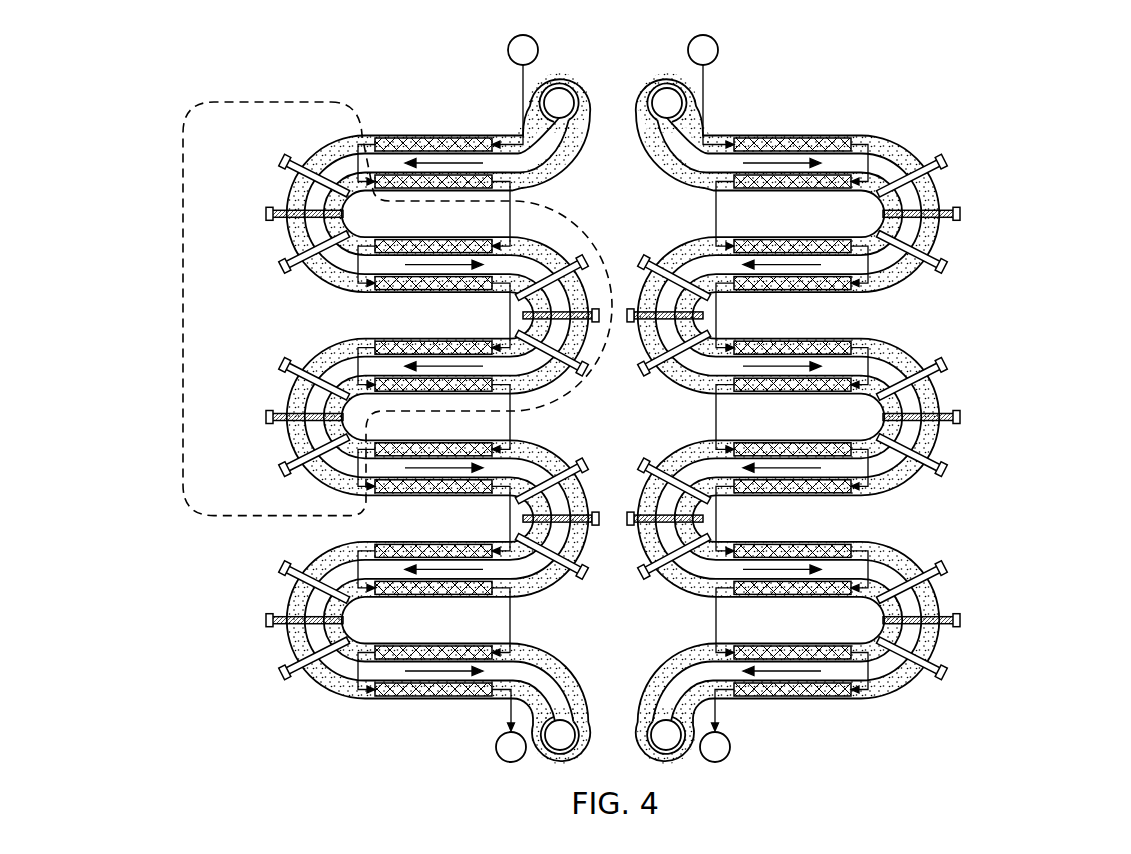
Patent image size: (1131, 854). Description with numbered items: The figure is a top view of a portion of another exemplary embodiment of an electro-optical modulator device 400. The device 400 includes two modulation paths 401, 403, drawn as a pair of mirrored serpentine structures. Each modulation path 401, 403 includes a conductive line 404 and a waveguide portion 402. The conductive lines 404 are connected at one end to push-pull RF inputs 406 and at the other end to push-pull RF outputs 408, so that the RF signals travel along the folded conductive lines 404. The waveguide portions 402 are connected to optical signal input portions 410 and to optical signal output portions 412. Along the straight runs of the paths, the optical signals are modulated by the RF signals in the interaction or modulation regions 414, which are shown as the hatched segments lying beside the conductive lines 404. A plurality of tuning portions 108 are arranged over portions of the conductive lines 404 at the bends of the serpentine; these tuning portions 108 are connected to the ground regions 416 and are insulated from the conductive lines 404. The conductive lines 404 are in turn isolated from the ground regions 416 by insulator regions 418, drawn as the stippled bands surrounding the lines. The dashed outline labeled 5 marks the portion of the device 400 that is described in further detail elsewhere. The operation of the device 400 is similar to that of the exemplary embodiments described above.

The detail region of FIG. 5 is at (181, 303).
The tuning portion 108 is at (266, 214).
The electro-optical modulator device 400 is at (1057, 62).
The modulation path 401 is at (598, 75).
The waveguide portion 402 is at (523, 101).
The modulation path 403 is at (676, 67).
The conductive line 404 is at (543, 148).
The push-pull RF input 406 is at (559, 100).
The push-pull RF output 408 is at (562, 733).
The optical signal input portion 410 is at (508, 50).
The optical signal output portion 412 is at (496, 751).
The modulation region 414 is at (441, 137).
The ground region 416 is at (225, 318).
The insulator region 418 is at (557, 165).